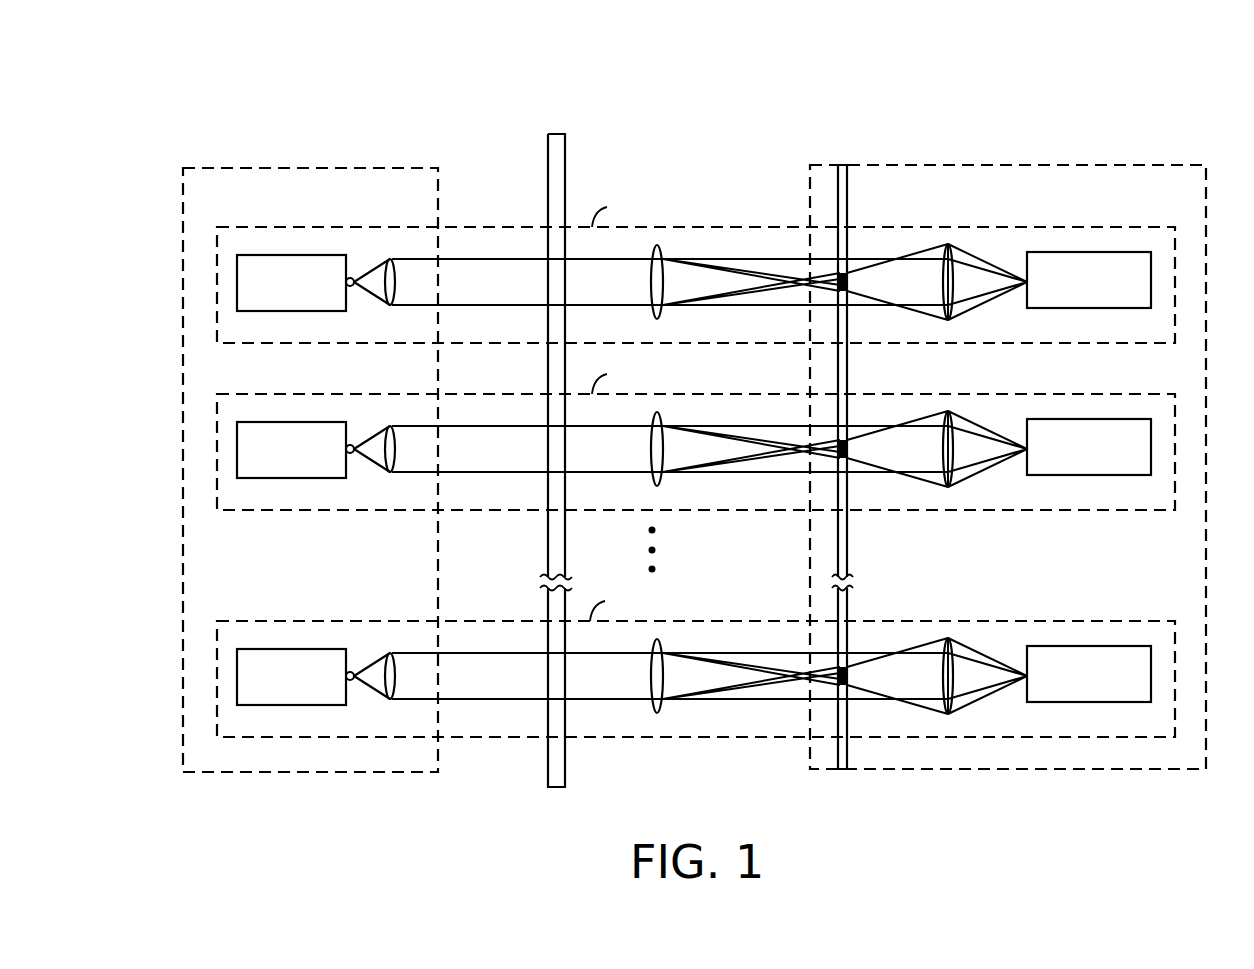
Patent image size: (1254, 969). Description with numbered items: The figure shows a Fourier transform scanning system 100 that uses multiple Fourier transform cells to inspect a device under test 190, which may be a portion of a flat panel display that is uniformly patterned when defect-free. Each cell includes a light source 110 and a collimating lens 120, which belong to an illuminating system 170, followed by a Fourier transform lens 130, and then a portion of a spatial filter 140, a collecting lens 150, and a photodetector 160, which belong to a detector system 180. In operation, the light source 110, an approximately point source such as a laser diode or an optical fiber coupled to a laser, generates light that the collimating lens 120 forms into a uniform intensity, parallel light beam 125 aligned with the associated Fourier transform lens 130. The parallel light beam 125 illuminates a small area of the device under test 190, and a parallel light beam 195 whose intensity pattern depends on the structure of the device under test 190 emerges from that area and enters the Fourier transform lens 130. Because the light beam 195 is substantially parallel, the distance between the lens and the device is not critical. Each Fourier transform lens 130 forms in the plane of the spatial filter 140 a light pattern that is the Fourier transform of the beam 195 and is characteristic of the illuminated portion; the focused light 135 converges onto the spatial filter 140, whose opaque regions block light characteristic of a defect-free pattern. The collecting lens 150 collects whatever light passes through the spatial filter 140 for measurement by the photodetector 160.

The Fourier transform scanning system 100 is at (742, 92).
The light source 110 is at (290, 312).
The collimating lens 120 is at (391, 260).
The parallel light beam 125 is at (525, 258).
The Fourier transform lens 130 is at (657, 245).
The focused light beam 135 is at (770, 307).
The spatial filter 140 is at (848, 210).
The collecting lens 150 is at (948, 244).
The photodetector 160 is at (1108, 252).
The illuminating system 170 is at (305, 167).
The detector system 180 is at (1075, 165).
The device under test 190 is at (555, 133).
The parallel light beam 195 is at (635, 307).